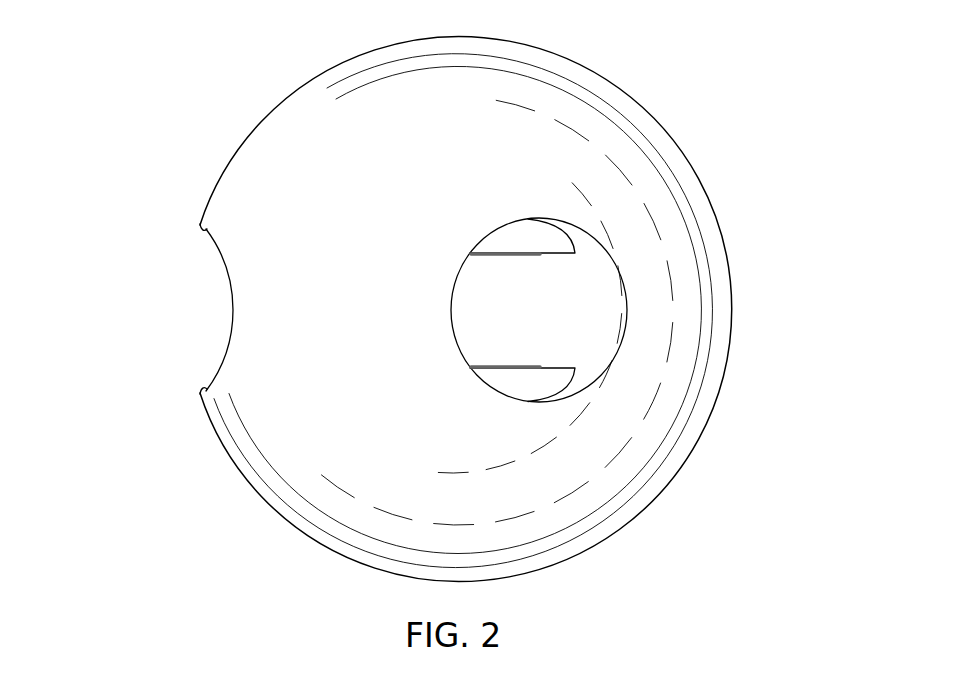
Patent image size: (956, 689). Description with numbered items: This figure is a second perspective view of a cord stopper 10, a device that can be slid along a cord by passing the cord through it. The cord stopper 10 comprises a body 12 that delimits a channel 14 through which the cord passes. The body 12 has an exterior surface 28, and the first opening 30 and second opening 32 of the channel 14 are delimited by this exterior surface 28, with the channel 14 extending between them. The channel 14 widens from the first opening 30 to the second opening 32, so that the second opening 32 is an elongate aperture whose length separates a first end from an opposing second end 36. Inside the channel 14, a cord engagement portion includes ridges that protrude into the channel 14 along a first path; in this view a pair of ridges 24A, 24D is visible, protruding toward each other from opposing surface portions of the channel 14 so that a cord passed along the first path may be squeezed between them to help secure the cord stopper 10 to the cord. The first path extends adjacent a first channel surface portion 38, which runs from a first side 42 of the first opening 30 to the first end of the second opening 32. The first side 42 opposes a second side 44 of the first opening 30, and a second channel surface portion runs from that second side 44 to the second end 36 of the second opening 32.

The cord stopper 10 is at (110, 91).
The body 12 is at (374, 115).
The channel 14 is at (541, 303).
The ridge 24A is at (522, 240).
The ridge 24D is at (513, 385).
The exterior surface 28 is at (602, 78).
The first opening 30 is at (597, 310).
The second opening 32 is at (213, 308).
The second end 36 is at (233, 314).
The first channel surface portion 38 is at (488, 316).
The first side 42 is at (625, 325).
The second side 44 is at (450, 312).